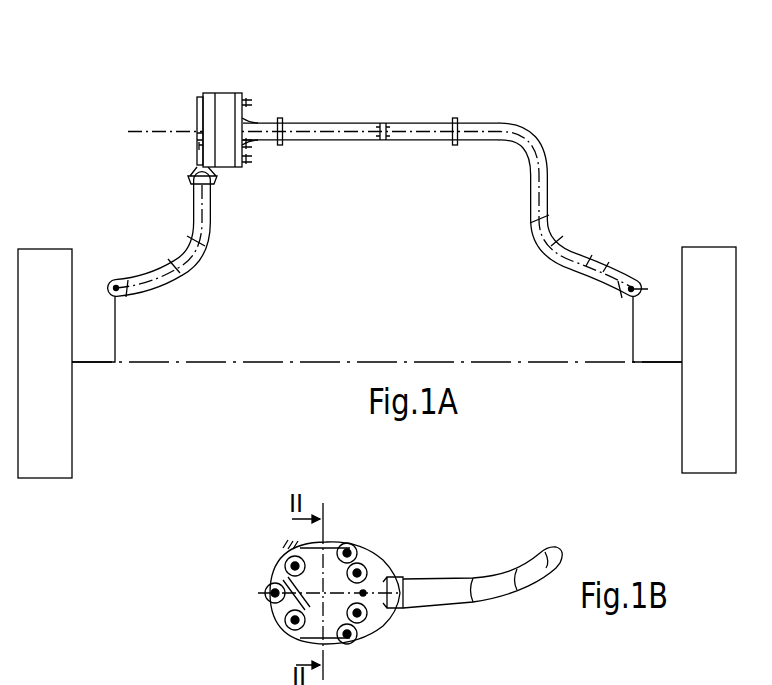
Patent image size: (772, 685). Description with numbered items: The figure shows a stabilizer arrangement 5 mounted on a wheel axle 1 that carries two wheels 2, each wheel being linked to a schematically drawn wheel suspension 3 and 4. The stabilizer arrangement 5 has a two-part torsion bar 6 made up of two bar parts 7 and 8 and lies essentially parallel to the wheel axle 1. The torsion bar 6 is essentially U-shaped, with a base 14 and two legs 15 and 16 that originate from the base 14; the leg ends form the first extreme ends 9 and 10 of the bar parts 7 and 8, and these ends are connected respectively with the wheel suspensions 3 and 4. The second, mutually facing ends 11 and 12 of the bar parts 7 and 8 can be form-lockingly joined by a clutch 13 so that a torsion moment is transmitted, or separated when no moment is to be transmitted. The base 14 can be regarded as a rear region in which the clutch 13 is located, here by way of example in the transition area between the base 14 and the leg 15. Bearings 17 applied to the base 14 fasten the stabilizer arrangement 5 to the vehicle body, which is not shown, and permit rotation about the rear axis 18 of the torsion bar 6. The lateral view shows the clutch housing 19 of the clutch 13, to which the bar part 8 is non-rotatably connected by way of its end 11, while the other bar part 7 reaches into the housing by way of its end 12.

In FIG. 1A, the wheel axle 1 is at (388, 318).
In FIG. 1A, the wheel 2 is at (50, 468).
In FIG. 1A, the wheel suspension 3 is at (116, 331).
In FIG. 1A, the wheel suspension 4 is at (631, 325).
In FIG. 1A, the stabilizer arrangement 5 is at (364, 162).
In FIG. 1B, the stabilizer arrangement 5 is at (413, 553).
In FIG. 1A, the torsion bar 6 is at (487, 122).
In FIG. 1A, the bar part 7 is at (534, 140).
In FIG. 1A, the bar part 8 is at (194, 205).
In FIG. 1A, the first extreme end 9 is at (105, 283).
In FIG. 1A, the first extreme end 10 is at (637, 283).
In FIG. 1A, the second end 11 is at (197, 131).
In FIG. 1A, the second end 12 is at (244, 118).
In FIG. 1A, the clutch 13 is at (224, 129).
In FIG. 1A, the base 14 is at (343, 123).
In FIG. 1A, the leg 15 is at (195, 255).
In FIG. 1A, the leg 16 is at (554, 238).
In FIG. 1A, the bearing 17 is at (282, 148).
In FIG. 1A, the rear axis 18 is at (137, 131).
In FIG. 1A, the clutch housing 19 is at (233, 150).
In FIG. 1B, the clutch housing 19 is at (330, 562).